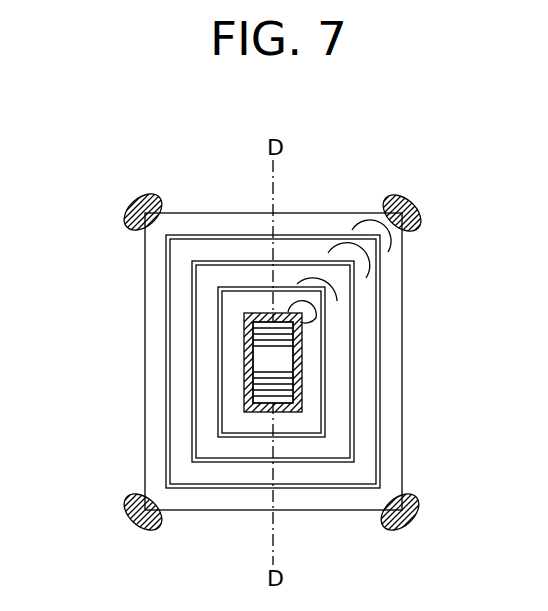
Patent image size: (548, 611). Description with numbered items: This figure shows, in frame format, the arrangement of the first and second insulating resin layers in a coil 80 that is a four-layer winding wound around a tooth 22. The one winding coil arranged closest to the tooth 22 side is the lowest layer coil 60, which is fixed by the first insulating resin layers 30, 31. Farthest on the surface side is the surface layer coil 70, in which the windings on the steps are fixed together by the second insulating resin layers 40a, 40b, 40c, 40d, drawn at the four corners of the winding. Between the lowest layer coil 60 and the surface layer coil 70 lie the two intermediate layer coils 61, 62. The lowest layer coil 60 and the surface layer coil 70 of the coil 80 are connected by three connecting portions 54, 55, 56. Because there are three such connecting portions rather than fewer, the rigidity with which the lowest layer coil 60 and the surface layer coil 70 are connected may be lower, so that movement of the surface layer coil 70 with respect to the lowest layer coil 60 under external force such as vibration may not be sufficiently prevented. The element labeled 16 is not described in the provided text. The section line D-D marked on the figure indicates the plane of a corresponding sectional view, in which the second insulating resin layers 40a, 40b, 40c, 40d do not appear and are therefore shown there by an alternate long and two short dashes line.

The coil 80 is at (220, 197).
The surface layer coil 70 is at (392, 311).
The intermediate layer coil 62 is at (365, 348).
The intermediate layer coil 61 is at (358, 378).
The lowest layer coil 60 is at (313, 407).
The insulating frame 16 is at (250, 368).
The tooth 22 is at (273, 362).
The first insulating resin layer 30 is at (306, 444).
The first insulating resin layer 31 is at (287, 412).
The connecting portion 54 is at (303, 280).
The connecting portion 55 is at (324, 258).
The connecting portion 56 is at (358, 226).
The second insulating resin layer 40a is at (130, 200).
The second insulating resin layer 40b is at (416, 203).
The second insulating resin layer 40c is at (413, 522).
The second insulating resin layer 40d is at (130, 520).